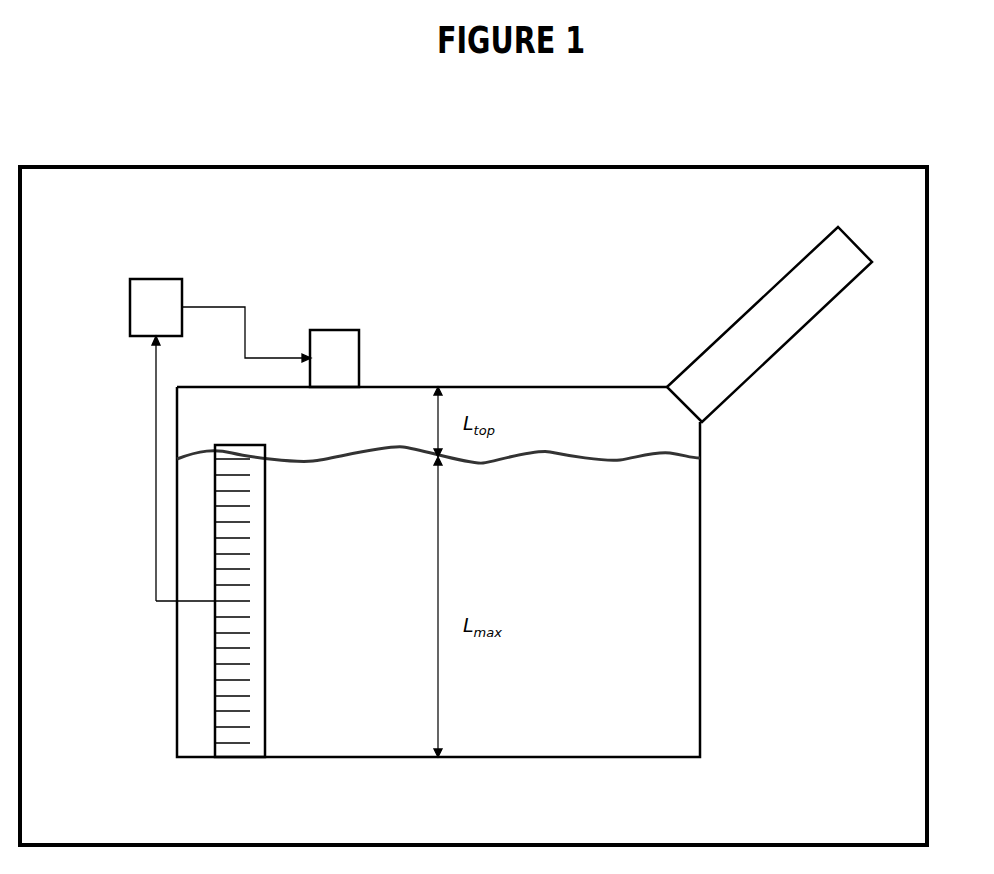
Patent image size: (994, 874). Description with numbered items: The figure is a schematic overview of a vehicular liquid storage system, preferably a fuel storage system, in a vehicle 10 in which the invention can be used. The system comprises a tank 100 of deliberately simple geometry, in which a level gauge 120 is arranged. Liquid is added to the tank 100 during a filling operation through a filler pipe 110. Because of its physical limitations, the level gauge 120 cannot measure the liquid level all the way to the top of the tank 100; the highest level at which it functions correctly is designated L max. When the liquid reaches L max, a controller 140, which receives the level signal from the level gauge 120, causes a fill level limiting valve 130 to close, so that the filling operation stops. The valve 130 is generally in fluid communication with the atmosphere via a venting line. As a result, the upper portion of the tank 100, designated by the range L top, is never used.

The vehicle 10 is at (655, 165).
The tank 100 is at (700, 724).
The filler pipe 110 is at (768, 360).
The level gauge 120 is at (265, 676).
The fill level limiting valve 130 is at (359, 341).
The controller 140 is at (130, 311).